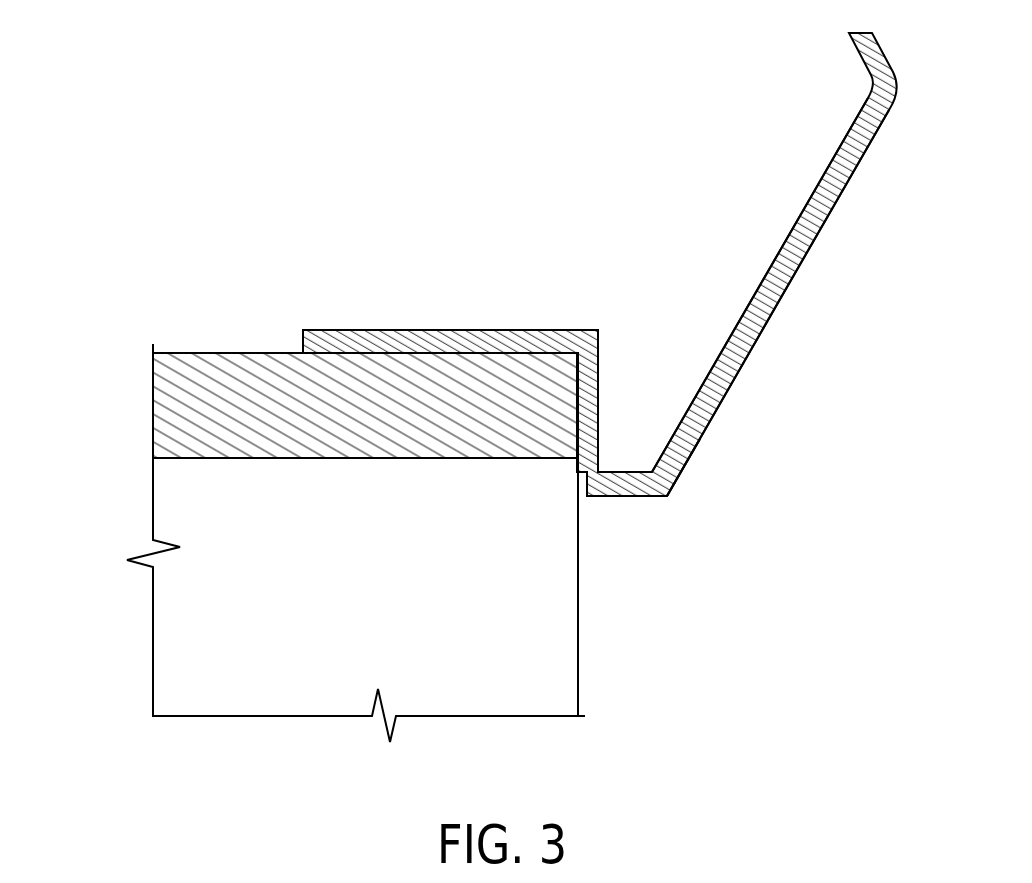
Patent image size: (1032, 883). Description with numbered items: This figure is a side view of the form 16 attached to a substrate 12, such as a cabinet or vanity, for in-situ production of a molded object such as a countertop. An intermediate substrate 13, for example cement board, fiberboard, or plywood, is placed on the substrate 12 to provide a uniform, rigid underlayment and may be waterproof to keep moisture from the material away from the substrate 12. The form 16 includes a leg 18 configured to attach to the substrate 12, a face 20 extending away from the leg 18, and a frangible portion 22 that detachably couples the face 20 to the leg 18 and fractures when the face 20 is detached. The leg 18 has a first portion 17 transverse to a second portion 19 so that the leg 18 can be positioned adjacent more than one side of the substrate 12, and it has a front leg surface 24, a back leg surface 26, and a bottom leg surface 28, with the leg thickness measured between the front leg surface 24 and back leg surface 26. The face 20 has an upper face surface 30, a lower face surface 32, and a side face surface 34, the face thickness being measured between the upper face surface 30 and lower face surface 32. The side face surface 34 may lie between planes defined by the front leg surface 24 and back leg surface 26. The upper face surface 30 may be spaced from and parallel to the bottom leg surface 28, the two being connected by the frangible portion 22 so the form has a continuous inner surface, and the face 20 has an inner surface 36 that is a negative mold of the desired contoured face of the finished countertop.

The substrate 12 is at (463, 692).
The intermediate substrate 13 is at (183, 390).
The form 16 is at (815, 190).
The first portion 17 is at (583, 353).
The leg 18 is at (443, 330).
The second portion 19 is at (351, 330).
The face 20 is at (782, 276).
The frangible portion 22 is at (600, 468).
The front leg surface 24 is at (600, 390).
The back leg surface 26 is at (580, 404).
The bottom leg surface 28 is at (582, 474).
The upper face surface 30 is at (642, 472).
The lower face surface 32 is at (652, 495).
The side face surface 34 is at (592, 485).
The inner surface 36 is at (843, 137).